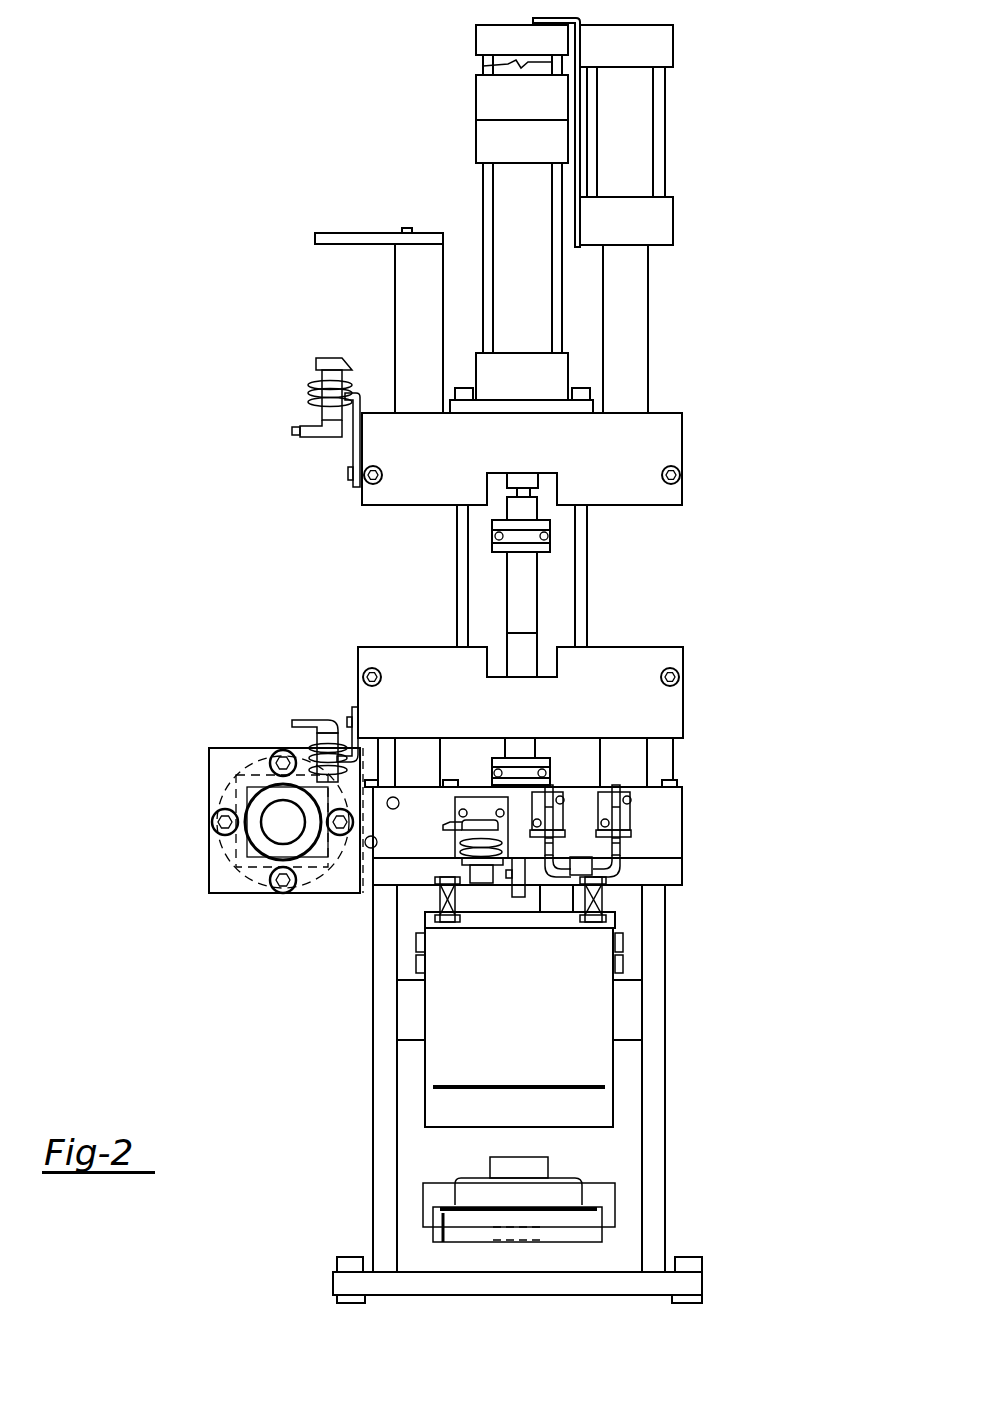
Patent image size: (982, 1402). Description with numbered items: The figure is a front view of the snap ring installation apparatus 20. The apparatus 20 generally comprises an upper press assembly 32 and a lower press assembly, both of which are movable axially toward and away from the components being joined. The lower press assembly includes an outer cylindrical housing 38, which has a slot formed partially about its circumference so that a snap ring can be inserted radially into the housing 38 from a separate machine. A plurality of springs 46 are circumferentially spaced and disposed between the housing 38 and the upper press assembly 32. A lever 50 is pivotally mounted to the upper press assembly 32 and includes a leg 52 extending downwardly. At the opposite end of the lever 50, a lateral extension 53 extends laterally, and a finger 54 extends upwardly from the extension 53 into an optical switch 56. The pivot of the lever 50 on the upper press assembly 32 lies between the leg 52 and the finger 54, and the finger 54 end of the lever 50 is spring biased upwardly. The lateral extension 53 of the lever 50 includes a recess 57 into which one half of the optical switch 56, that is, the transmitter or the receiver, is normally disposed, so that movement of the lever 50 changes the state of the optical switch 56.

The snap ring installation apparatus 20 is at (714, 415).
The upper press assembly 32 is at (687, 835).
The outer cylindrical housing 38 is at (619, 1017).
The springs 46 is at (429, 899).
The lever 50 is at (520, 903).
The leg 52 is at (512, 875).
The lateral extension 53 is at (549, 879).
The finger 54 is at (579, 857).
The optical switch 56 is at (560, 781).
The recess 57 is at (577, 879).